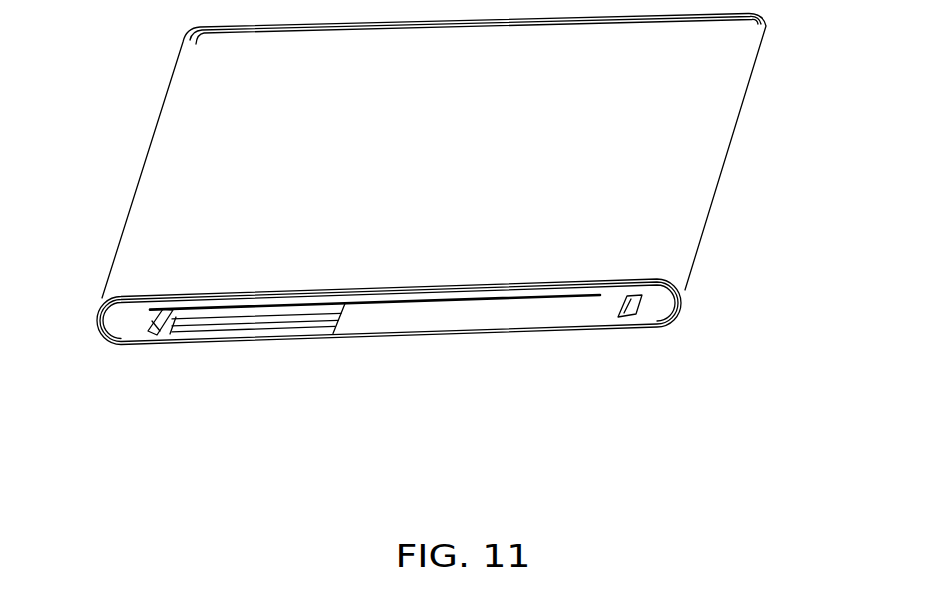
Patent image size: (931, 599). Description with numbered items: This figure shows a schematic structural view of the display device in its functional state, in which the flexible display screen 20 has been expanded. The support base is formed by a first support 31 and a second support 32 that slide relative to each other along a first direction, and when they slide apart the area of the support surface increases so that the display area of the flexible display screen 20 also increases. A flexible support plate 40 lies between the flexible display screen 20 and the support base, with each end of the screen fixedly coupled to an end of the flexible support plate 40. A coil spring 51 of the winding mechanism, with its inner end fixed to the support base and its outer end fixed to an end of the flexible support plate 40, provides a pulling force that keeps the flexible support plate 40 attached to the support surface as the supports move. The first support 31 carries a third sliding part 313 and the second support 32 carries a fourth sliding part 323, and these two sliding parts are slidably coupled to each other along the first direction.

The flexible display screen 20 is at (490, 270).
The first support 31 is at (110, 323).
The second support 32 is at (652, 310).
The flexible support plate 40 is at (542, 285).
The coil spring 51 is at (135, 338).
The third sliding part 313 is at (223, 337).
The fourth sliding part 323 is at (387, 323).